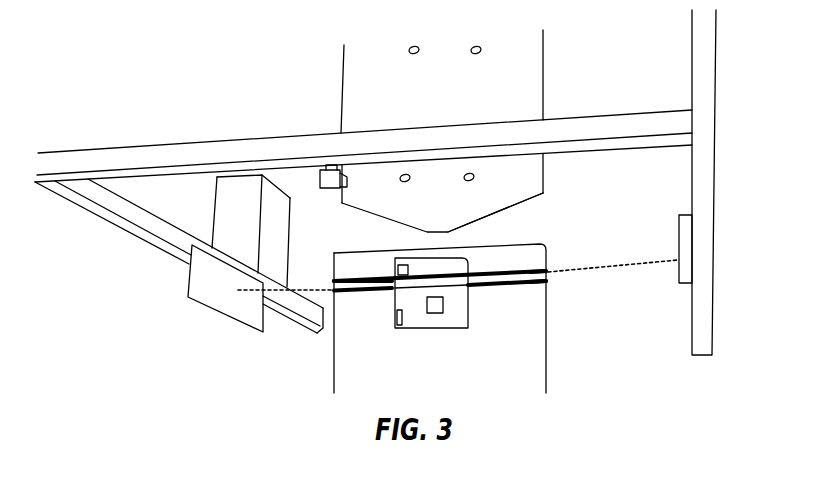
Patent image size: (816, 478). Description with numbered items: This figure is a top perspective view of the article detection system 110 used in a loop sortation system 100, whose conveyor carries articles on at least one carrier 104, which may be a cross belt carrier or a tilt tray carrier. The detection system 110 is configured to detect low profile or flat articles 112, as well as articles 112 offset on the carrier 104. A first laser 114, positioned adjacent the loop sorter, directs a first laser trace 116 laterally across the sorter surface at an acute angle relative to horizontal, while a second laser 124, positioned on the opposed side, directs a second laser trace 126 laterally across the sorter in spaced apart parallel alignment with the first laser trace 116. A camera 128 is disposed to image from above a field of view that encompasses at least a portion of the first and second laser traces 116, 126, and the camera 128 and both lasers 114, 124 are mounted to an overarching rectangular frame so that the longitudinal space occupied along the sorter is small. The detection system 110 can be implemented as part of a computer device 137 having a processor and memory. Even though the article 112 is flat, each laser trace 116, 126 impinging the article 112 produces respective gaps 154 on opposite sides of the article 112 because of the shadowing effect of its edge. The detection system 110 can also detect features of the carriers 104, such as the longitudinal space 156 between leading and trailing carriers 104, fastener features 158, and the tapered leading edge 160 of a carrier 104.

The loop sortation system 100 is at (243, 55).
The carrier 104 is at (544, 82).
The article detection system 110 is at (188, 119).
The article 112 is at (442, 330).
The first laser 114 is at (203, 303).
The first laser trace 116 is at (351, 279).
The second laser 124 is at (687, 285).
The second laser trace 126 is at (541, 284).
The camera 128 is at (320, 174).
The computer device 137 is at (215, 195).
The gap 154 is at (392, 272).
The longitudinal space 156 is at (543, 232).
The fastener feature 158 is at (474, 177).
The tapered leading edge 160 is at (483, 227).